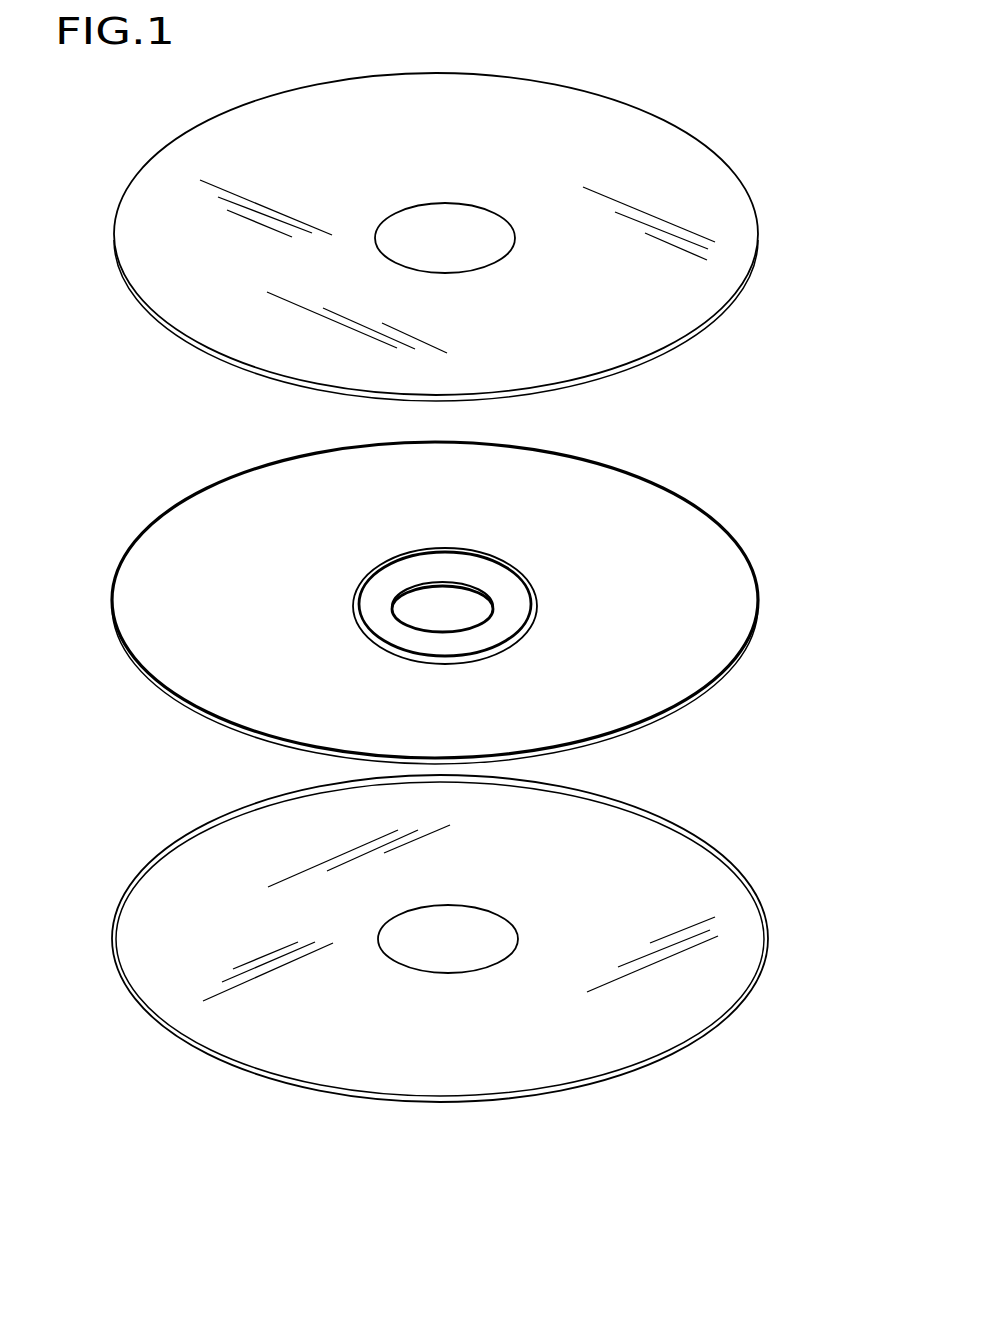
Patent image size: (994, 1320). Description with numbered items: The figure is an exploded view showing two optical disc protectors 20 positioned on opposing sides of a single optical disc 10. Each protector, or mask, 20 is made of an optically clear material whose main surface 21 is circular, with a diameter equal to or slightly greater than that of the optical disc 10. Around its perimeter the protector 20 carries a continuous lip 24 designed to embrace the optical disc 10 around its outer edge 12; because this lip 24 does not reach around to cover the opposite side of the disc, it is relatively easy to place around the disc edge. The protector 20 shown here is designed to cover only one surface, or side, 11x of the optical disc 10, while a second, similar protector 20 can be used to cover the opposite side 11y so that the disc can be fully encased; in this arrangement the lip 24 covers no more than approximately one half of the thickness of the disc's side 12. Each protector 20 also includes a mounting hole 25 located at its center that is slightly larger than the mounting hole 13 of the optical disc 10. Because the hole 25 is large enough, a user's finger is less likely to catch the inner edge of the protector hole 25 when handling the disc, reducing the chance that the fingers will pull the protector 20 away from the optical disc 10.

The optical disc 10 is at (140, 513).
The surface of the optical disc 11x is at (237, 616).
The opposite side of the disc 11y is at (684, 725).
The outer edge 12 is at (733, 677).
The mounting hole of the optical disc 13 is at (445, 606).
The optical disc protector 20 is at (690, 122).
The main surface 21 is at (188, 237).
The lip 24 is at (723, 316).
The mounting hole 25 is at (446, 588).